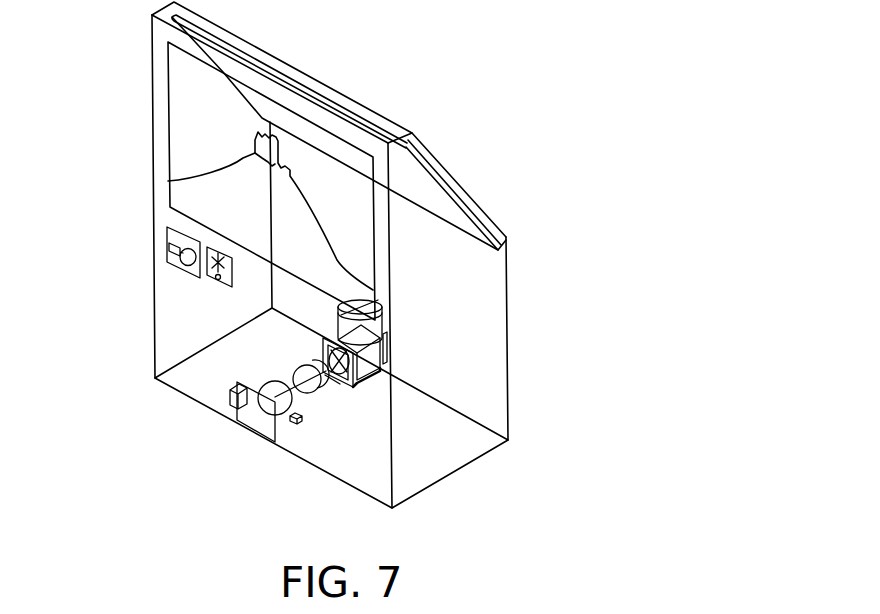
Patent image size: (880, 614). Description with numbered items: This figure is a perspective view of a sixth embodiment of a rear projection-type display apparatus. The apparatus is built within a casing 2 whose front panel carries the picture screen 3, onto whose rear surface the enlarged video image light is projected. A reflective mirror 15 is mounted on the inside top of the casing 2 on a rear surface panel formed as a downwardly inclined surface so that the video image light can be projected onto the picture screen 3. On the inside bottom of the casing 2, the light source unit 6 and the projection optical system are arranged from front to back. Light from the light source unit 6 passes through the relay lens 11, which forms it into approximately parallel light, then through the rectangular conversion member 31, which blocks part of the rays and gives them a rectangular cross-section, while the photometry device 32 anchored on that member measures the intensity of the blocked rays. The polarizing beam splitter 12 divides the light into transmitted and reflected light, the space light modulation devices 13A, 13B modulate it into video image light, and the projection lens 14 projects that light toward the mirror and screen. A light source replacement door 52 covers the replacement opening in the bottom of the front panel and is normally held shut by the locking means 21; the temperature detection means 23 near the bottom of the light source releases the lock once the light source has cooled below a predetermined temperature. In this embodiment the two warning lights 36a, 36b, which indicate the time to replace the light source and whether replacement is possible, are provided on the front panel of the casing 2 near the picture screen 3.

The casing 2 is at (485, 337).
The picture screen 3 is at (184, 138).
The light source unit 6 is at (262, 386).
The relay lens 11 is at (325, 396).
The polarizing beam splitter 12 is at (385, 346).
The space light modulation device 13A is at (372, 372).
The space light modulation device 13B is at (389, 358).
The projection lens 14 is at (380, 323).
The reflective mirror 15 is at (425, 188).
The locking means 21 is at (232, 395).
The temperature detection means 23 is at (298, 425).
The rectangular conversion member 31 is at (343, 386).
The photometry device 32 is at (324, 344).
The warning light 36a is at (178, 268).
The warning light 36b is at (224, 290).
The light source replacement door 52 is at (243, 423).